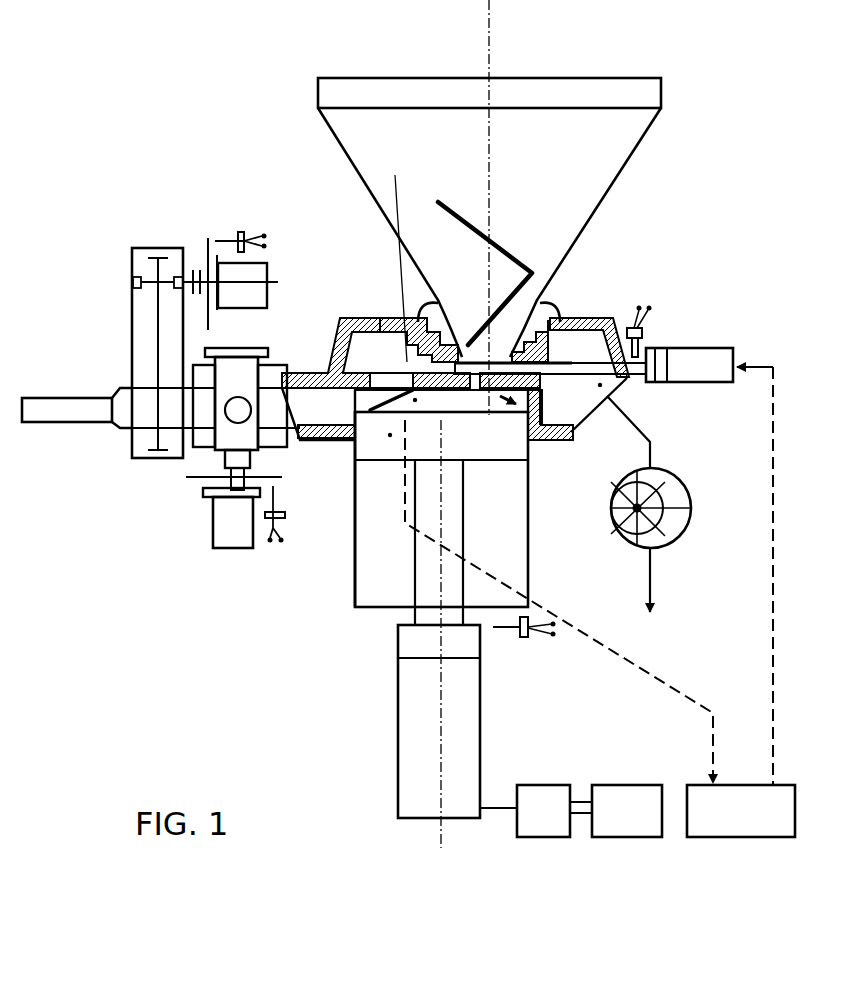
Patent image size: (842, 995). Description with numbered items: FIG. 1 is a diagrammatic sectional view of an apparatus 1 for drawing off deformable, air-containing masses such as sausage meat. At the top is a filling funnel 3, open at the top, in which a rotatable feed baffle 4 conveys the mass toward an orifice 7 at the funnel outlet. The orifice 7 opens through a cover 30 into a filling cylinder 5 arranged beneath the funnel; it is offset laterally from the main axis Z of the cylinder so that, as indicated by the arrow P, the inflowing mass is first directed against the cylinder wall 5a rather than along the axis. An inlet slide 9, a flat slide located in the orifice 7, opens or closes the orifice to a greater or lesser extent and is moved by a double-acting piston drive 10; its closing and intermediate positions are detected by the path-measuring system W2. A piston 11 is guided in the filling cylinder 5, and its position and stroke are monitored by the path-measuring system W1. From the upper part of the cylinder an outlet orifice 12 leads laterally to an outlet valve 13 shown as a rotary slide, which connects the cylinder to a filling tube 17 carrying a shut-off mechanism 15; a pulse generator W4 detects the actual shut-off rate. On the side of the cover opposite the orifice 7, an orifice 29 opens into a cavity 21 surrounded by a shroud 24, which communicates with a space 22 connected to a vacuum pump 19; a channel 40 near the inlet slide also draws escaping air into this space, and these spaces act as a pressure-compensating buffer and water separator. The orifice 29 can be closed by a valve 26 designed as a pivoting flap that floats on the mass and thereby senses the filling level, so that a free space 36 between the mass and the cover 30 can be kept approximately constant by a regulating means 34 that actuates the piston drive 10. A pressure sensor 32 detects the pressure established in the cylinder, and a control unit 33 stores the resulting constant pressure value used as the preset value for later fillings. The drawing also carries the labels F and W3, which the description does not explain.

The apparatus 1 is at (672, 128).
The filling funnel 3 is at (612, 190).
The feed baffle 4 is at (500, 248).
The filling cylinder 5 is at (528, 558).
The cylinder wall 5a is at (550, 396).
The orifice 7 is at (477, 357).
The inlet slide 9 is at (490, 420).
The piston drive 10 is at (705, 348).
The piston 11 is at (352, 505).
The outlet orifice 12 is at (313, 405).
The outlet valve 13 is at (240, 348).
The shut-off mechanism 15 is at (147, 330).
The filling tube 17 is at (86, 405).
The vacuum pump 19 is at (683, 537).
The cavity 21 is at (388, 377).
The space 22 is at (600, 385).
The shroud 24 is at (587, 320).
The pivoting flap valve 26 is at (390, 435).
The orifice 29 is at (368, 347).
The cover 30 is at (336, 440).
The pressure sensor 32 is at (538, 783).
The control unit 33 is at (627, 783).
The regulating means 34 is at (748, 783).
The free space 36 is at (415, 400).
The channel 40 is at (552, 392).
The filling level F is at (396, 259).
The arrow P is at (502, 398).
The main axis Z is at (438, 832).
The path measuring system W1 is at (524, 645).
The path-measuring system W2 is at (657, 332).
The sensor W3 is at (251, 530).
The pulse generator W4 is at (233, 231).